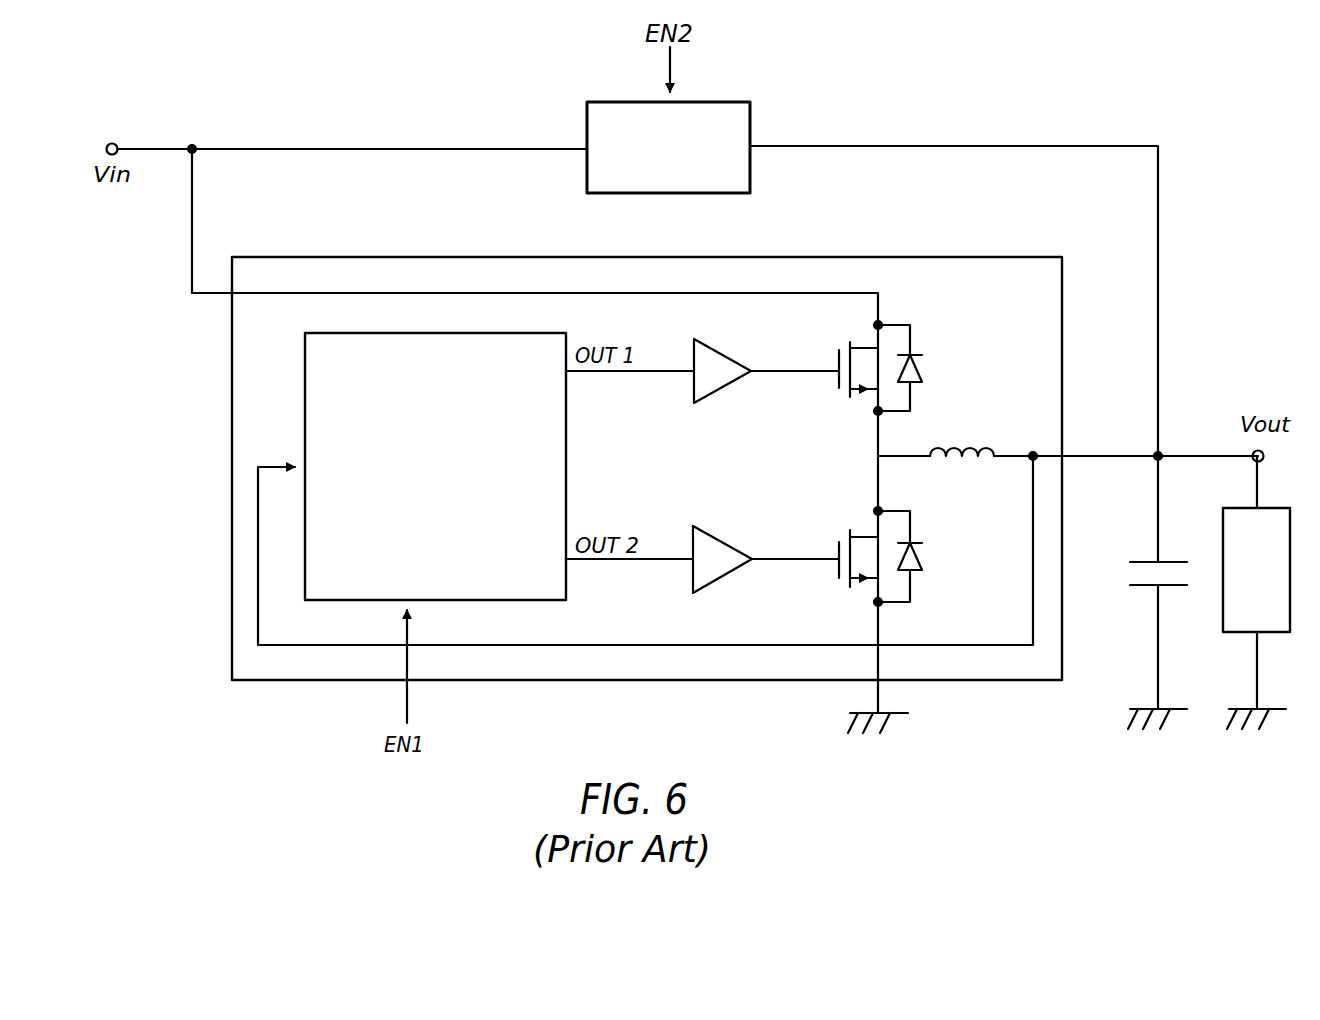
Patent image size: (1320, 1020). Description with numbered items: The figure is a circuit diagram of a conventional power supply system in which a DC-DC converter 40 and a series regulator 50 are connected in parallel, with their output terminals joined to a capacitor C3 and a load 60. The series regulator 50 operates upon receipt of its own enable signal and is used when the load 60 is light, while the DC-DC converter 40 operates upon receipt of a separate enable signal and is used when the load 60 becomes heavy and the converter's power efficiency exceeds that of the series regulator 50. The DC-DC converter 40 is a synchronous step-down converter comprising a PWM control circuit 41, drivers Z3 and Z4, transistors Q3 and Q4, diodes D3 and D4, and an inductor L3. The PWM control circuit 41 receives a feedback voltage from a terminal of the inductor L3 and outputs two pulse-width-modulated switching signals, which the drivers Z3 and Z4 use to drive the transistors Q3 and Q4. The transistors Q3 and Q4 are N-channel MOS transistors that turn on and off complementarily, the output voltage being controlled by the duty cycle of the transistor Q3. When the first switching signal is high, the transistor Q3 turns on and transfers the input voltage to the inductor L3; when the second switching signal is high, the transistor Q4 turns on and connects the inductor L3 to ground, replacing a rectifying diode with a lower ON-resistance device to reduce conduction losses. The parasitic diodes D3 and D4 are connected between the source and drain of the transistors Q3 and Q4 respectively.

The DC-DC converter 40 is at (270, 257).
The PWM control circuit 41 is at (305, 350).
The series regulator 50 is at (725, 100).
The load 60 is at (1233, 507).
The driver Z3 is at (725, 352).
The driver Z4 is at (725, 540).
The transistor Q3 is at (838, 355).
The transistor Q4 is at (837, 548).
The parasitic diode D3 is at (917, 355).
The parasitic diode D4 is at (918, 543).
The inductor L3 is at (940, 450).
The capacitor C3 is at (1143, 588).